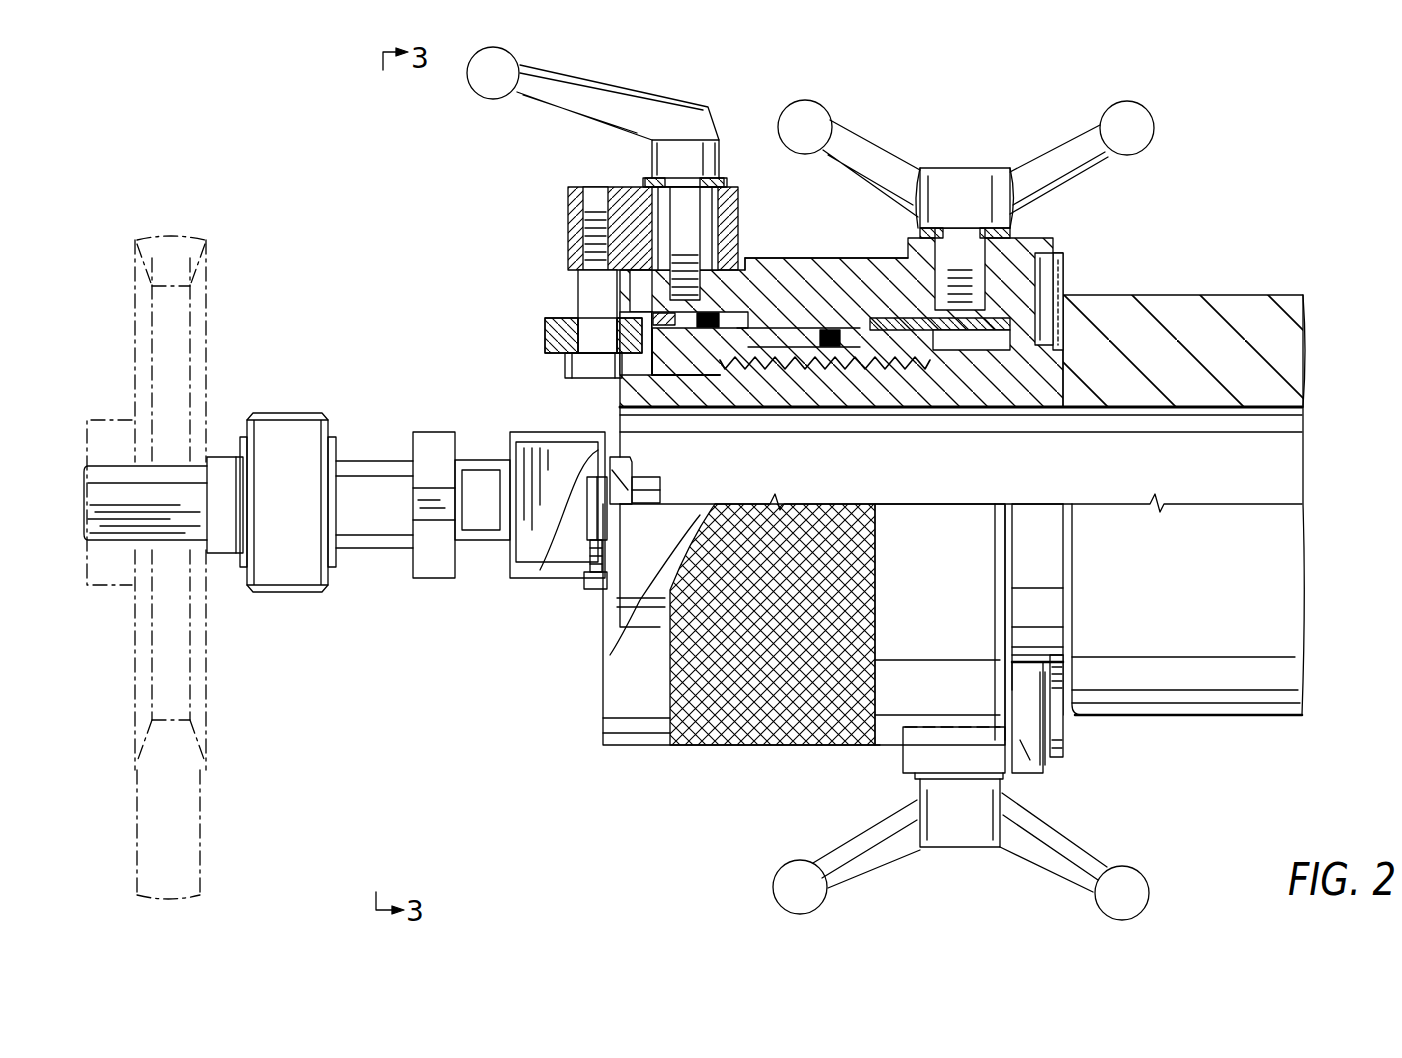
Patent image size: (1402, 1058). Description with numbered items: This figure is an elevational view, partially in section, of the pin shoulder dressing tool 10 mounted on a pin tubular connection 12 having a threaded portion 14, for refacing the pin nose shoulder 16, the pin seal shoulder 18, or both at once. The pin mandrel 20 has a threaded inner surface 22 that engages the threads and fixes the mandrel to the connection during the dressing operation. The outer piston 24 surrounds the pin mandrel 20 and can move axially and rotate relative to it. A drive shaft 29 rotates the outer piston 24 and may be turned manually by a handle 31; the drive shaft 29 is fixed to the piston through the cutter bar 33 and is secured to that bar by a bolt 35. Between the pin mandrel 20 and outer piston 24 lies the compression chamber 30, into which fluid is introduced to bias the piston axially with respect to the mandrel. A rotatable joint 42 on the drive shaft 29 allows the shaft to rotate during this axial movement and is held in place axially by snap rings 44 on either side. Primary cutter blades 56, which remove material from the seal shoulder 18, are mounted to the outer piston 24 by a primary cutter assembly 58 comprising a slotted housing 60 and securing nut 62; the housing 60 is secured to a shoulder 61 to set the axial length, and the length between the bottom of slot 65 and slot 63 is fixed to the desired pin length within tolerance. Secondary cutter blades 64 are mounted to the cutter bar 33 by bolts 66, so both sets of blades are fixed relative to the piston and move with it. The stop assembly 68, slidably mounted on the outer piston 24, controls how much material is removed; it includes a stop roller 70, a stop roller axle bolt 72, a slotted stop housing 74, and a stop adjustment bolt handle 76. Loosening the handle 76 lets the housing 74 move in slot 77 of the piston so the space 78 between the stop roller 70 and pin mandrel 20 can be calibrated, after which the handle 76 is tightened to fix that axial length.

The pin shoulder dressing tool 10 is at (452, 232).
The pin tubular connection 12 is at (1208, 322).
The threaded portion 14 is at (870, 392).
The pin nose shoulder 16 is at (618, 396).
The pin seal shoulder 18 is at (1066, 312).
The pin mandrel 20 is at (848, 330).
The threaded inner surface 22 is at (890, 328).
The outer piston 24 is at (695, 745).
The drive shaft 29 is at (374, 468).
The compression chamber 30 is at (815, 362).
The handle 31 is at (190, 812).
The cutter bar 33 is at (528, 530).
The bolt 35 is at (660, 488).
The rotatable joint 42 is at (286, 433).
The snap rings 44 is at (243, 565).
The primary cutter blades 56 is at (1065, 265).
The primary cutter assembly 58 is at (870, 792).
The housing 60 is at (1045, 775).
The shoulder 61 is at (1002, 352).
The securing nut 62 is at (966, 183).
The slot 63 is at (1028, 350).
The secondary cutter blades 64 is at (632, 462).
The slot 65 is at (592, 520).
The bolts 66 is at (590, 592).
The stop assembly 68 is at (572, 166).
The stop roller 70 is at (548, 336).
The stop roller axle bolt 72 is at (590, 230).
The slotted stop housing 74 is at (628, 200).
The stop adjustment bolt handle 76 is at (640, 100).
The slot 77 is at (745, 262).
The space 78 is at (612, 380).